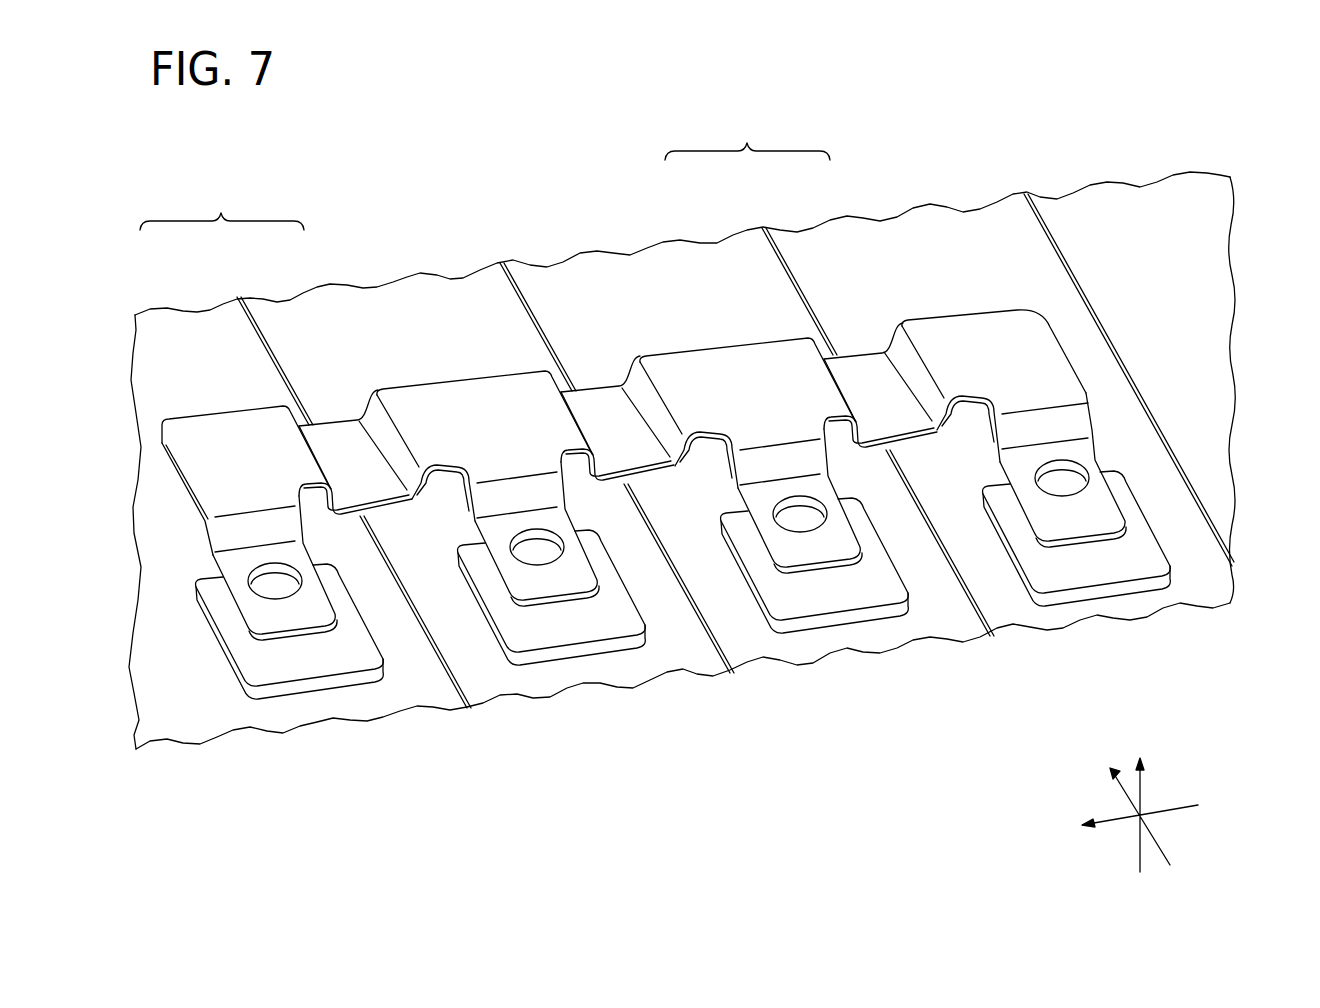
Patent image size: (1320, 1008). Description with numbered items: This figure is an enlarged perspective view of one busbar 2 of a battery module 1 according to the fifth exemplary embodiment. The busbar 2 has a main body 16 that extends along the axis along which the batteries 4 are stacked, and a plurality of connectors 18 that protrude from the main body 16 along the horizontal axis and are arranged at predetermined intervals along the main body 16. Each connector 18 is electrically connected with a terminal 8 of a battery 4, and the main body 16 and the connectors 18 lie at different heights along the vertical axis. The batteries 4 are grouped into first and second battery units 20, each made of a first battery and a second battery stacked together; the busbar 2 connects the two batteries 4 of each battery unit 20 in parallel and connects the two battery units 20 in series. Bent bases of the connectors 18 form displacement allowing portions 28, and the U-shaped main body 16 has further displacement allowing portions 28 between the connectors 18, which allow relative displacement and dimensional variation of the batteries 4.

The battery module 1 is at (726, 857).
The busbar 2 is at (716, 396).
The battery 4 is at (192, 340).
The terminal 8 is at (298, 652).
The main body 16 is at (1027, 323).
The connector 18 is at (1153, 520).
The battery unit 20 is at (485, 169).
The displacement allowing portion 28 is at (893, 340).